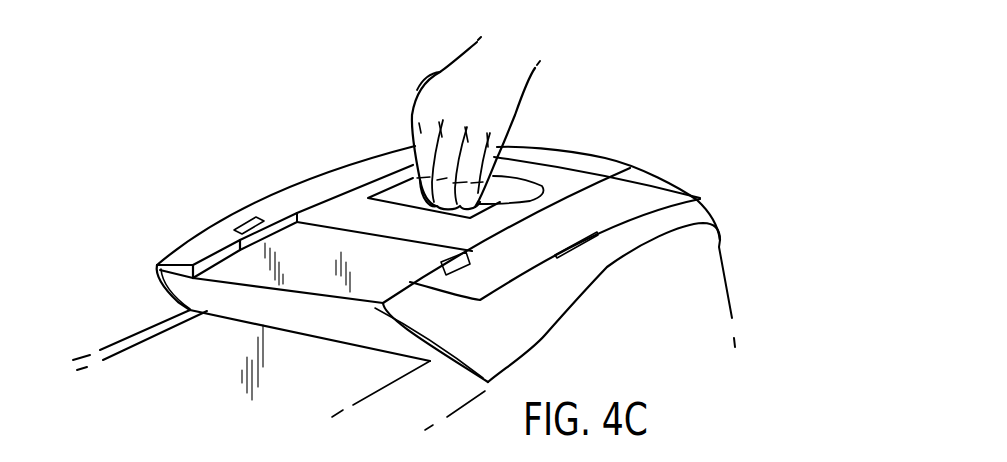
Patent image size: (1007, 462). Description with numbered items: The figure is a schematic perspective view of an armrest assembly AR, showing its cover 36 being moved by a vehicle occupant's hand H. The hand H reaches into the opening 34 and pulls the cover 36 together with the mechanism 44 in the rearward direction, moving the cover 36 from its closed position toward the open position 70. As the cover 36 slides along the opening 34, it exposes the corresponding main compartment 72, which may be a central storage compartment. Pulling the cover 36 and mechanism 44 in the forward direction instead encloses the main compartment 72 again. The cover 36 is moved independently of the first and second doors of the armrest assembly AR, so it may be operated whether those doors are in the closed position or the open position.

The opening 34 is at (557, 172).
The cover 36 is at (587, 179).
The mechanism 44 is at (503, 203).
The open position 70 is at (391, 129).
The main compartment 72 is at (290, 240).
The hand H is at (443, 78).
The armrest assembly AR is at (617, 149).